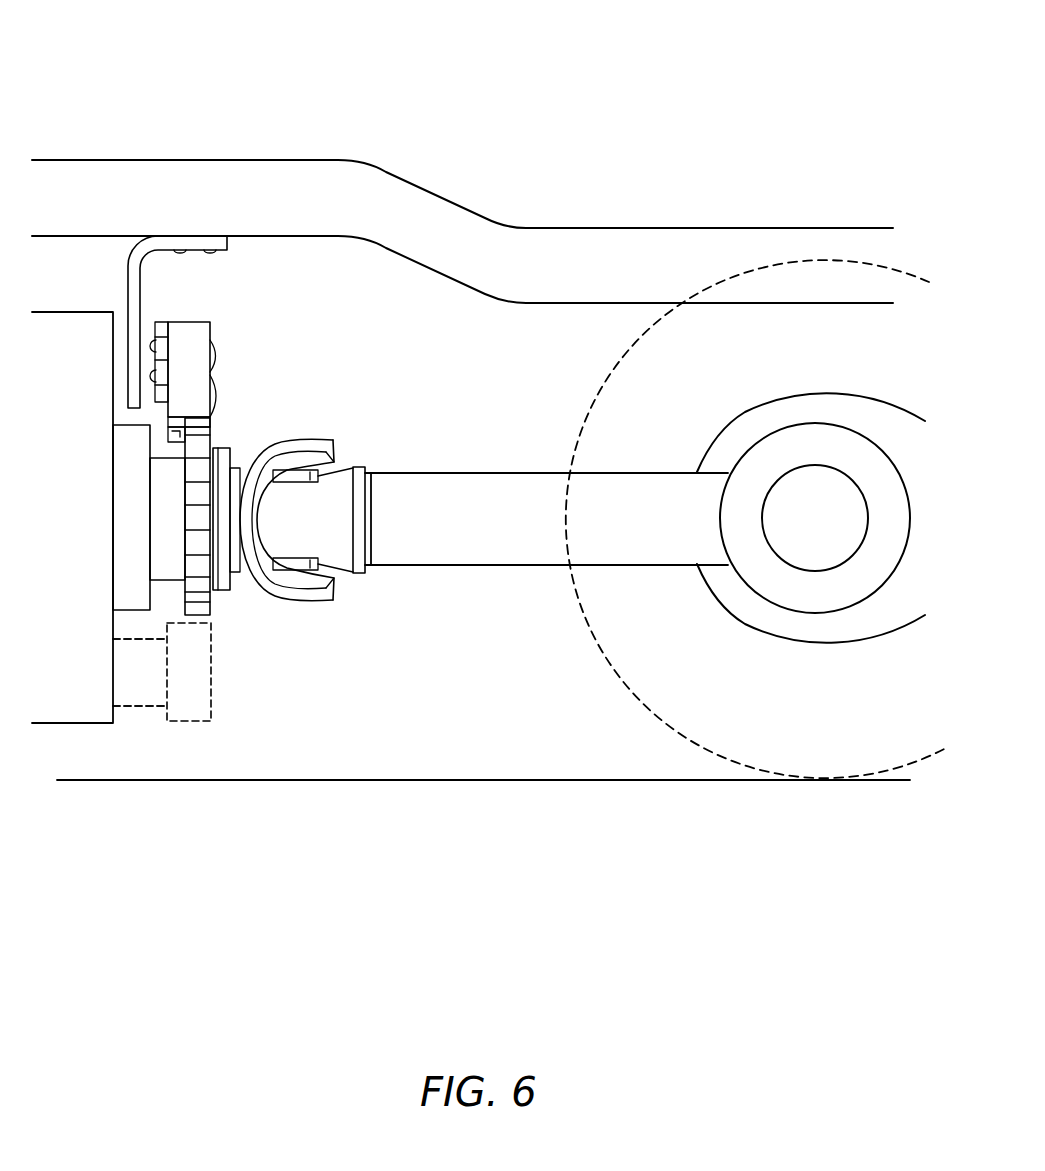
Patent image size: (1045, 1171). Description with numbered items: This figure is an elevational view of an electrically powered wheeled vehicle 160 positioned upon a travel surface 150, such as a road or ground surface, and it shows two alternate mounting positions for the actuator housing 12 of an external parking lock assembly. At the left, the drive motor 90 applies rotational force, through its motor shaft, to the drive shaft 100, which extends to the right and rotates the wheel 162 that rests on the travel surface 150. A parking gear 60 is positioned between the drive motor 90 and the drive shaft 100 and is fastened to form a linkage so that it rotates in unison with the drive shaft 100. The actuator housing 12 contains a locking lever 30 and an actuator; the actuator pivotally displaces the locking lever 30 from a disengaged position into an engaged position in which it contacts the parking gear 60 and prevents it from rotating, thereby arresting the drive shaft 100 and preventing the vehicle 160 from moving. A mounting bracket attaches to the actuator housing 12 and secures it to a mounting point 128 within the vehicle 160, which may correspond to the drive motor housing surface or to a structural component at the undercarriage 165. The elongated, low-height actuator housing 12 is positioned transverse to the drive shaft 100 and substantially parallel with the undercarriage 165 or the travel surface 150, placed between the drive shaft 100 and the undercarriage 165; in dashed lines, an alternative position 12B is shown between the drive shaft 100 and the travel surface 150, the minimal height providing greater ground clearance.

The electrically powered wheeled vehicle 160 is at (375, 88).
The mounting point 128 is at (191, 203).
The undercarriage 165 is at (467, 291).
The drive motor 90 is at (63, 725).
The actuator housing 12 is at (208, 322).
The alternative position 12B is at (212, 672).
The locking lever 30 is at (172, 437).
The parking gear 60 is at (214, 448).
The drive shaft 100 is at (463, 566).
The wheel 162 is at (626, 353).
The travel surface 150 is at (437, 780).